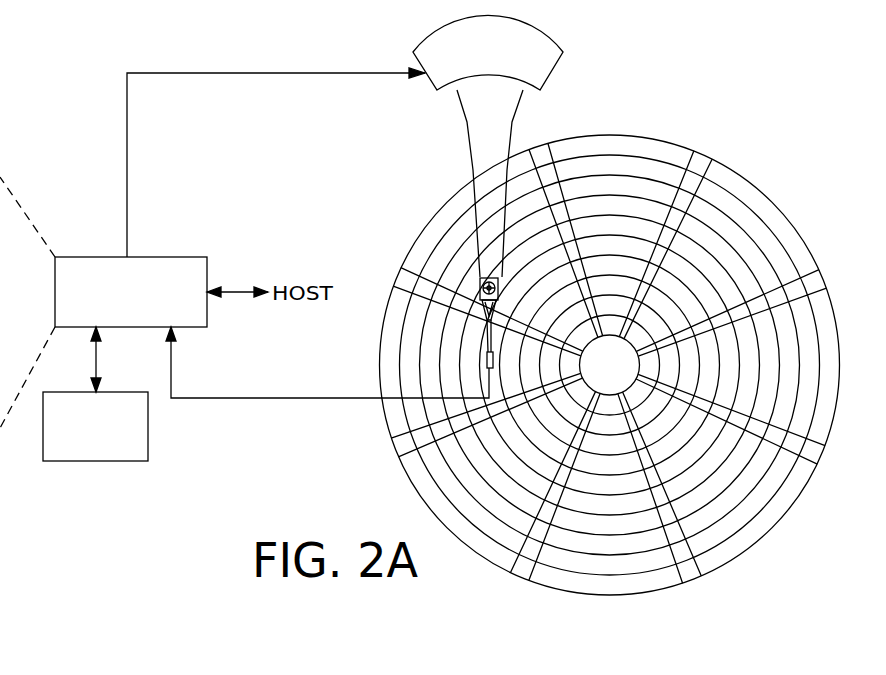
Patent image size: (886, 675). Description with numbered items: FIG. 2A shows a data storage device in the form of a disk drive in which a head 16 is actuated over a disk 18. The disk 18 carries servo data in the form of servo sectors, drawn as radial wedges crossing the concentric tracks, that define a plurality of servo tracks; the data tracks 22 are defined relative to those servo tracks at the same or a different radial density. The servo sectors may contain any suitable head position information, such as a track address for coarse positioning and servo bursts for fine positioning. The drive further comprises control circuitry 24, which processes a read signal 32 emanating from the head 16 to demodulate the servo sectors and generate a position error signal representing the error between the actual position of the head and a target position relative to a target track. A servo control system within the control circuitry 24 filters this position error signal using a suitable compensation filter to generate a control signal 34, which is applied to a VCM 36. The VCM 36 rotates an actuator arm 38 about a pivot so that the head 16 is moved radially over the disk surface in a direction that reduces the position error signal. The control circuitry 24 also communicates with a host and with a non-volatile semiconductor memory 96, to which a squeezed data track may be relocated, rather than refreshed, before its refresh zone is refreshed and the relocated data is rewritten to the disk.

The head 16 is at (482, 367).
The disk 18 is at (767, 187).
The data tracks 22 is at (598, 163).
The control circuitry 24 is at (170, 257).
The read signal 32 is at (262, 399).
The control signal 34 is at (127, 156).
The VCM 36 is at (430, 82).
The actuator arm 38 is at (471, 160).
The non-volatile semiconductor memory 96 is at (93, 461).